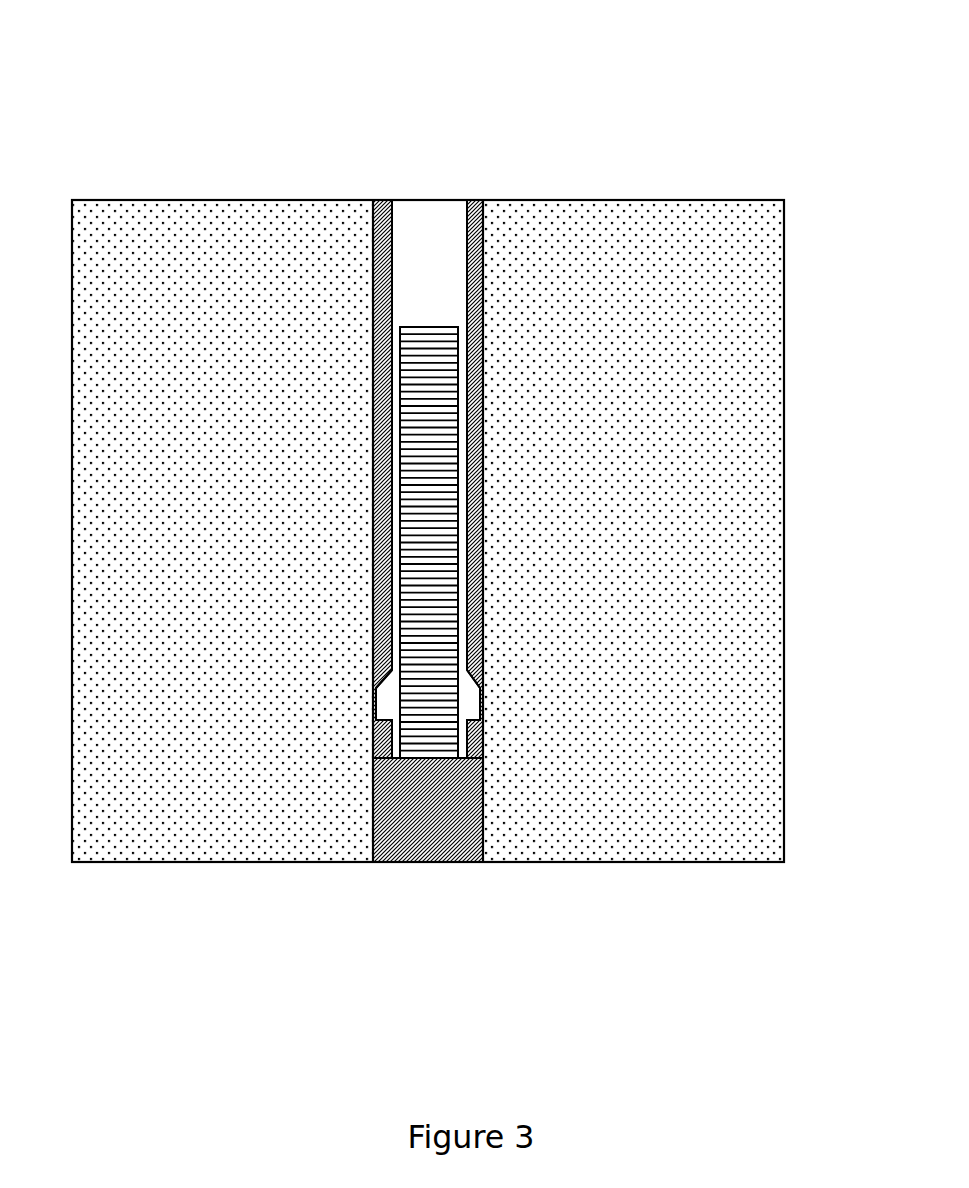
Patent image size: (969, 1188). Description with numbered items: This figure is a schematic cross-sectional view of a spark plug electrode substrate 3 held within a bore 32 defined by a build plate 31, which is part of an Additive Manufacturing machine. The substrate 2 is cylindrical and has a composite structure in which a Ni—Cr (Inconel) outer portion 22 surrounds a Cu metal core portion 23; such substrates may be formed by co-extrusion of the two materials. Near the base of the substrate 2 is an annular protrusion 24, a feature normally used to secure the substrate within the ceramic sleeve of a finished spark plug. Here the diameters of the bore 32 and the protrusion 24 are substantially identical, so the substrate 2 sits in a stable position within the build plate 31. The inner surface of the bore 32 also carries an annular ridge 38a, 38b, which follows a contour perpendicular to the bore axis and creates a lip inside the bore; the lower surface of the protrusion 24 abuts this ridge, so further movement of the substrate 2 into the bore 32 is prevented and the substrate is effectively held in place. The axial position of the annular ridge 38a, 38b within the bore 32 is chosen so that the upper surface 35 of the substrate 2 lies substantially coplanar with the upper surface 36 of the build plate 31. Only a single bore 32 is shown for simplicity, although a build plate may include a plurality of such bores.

The substrate 3 is at (422, 513).
The upper surface of the build plate 36 is at (128, 200).
The build plate 31 is at (220, 242).
The substrate 2 is at (393, 454).
The upper surface of the substrate 35 is at (435, 200).
The outer portion 22 is at (422, 256).
The core portion 23 is at (432, 515).
The annular protrusion 24 is at (473, 688).
The annular ridge 38a is at (376, 721).
The annular ridge 38b is at (478, 725).
The bore 32 is at (439, 822).